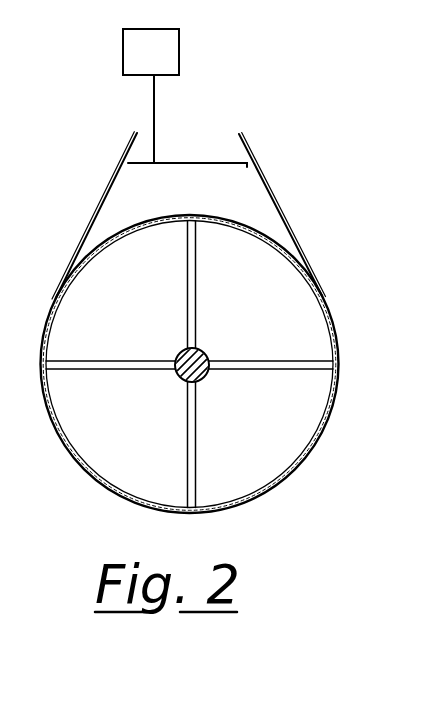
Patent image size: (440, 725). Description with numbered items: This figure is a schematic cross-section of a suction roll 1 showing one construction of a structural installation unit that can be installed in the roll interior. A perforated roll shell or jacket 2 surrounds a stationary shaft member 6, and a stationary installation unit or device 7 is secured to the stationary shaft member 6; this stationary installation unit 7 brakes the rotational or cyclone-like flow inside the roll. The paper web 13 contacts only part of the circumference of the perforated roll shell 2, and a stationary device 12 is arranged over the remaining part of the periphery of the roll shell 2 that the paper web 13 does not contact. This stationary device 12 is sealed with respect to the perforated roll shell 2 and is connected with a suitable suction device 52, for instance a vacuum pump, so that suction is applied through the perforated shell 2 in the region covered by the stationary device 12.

The apparatus 1 is at (67, 468).
The perforated roll shell 2 is at (313, 453).
The stationary shaft member 6 is at (177, 353).
The stationary installation unit 7 is at (196, 303).
The stationary device 12 is at (245, 195).
The paper web 13 is at (128, 145).
The suction device 52 is at (166, 53).